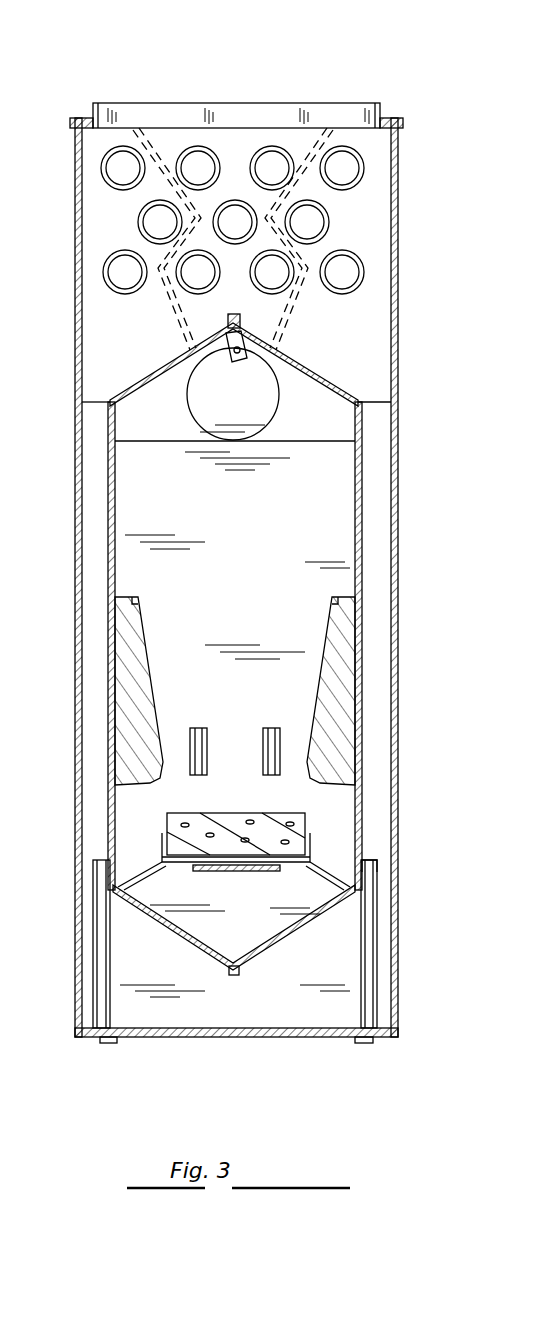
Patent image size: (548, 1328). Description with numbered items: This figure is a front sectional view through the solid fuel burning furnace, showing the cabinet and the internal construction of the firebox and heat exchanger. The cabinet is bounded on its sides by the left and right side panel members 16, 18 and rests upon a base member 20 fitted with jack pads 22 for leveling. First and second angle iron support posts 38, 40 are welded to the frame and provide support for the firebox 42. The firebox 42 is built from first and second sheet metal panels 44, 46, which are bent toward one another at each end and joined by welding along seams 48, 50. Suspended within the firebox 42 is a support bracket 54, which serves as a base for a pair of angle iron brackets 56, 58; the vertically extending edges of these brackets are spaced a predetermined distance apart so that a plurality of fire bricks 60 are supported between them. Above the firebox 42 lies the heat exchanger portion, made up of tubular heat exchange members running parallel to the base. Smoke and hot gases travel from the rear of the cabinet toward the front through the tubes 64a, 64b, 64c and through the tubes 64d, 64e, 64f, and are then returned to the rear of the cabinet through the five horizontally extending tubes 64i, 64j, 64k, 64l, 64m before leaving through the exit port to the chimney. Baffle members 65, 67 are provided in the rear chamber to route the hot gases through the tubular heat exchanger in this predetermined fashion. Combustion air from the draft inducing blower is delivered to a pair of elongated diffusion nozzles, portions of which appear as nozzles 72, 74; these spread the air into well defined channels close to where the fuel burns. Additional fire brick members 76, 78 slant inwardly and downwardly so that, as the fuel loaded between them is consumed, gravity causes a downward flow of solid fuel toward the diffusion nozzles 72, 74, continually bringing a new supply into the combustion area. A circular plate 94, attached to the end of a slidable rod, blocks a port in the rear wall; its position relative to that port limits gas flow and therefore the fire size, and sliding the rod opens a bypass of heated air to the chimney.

The left side panel member 16 is at (76, 520).
The right side panel member 18 is at (398, 520).
The base member 20 is at (224, 1038).
The jack pads 22 is at (108, 1044).
The first angle iron support post 38 is at (96, 965).
The second angle iron support post 40 is at (376, 965).
The firebox 42 is at (252, 556).
The first sheet metal panel 44 is at (116, 490).
The second sheet metal panel 46 is at (354, 490).
The seam 48 is at (240, 974).
The seam 50 is at (240, 318).
The support bracket 54 is at (378, 868).
The angle iron bracket 56 is at (310, 827).
The angle iron bracket 58 is at (162, 827).
The fire bricks 60 is at (245, 813).
The heat exchanger tube 64a is at (364, 168).
The heat exchanger tube 64b is at (329, 222).
The heat exchanger tube 64c is at (364, 272).
The heat exchanger tube 64d is at (101, 168).
The heat exchanger tube 64e is at (138, 222).
The heat exchanger tube 64f is at (103, 272).
The heat exchanger tube 64i is at (198, 146).
The heat exchanger tube 64j is at (272, 146).
The heat exchanger tube 64k is at (234, 200).
The heat exchanger tube 64l is at (183, 290).
The heat exchanger tube 64m is at (287, 290).
The baffle member 65 is at (292, 330).
The baffle member 67 is at (172, 330).
The diffusion nozzle 72 is at (198, 728).
The diffusion nozzle 74 is at (270, 728).
The fire brick member 76 is at (140, 630).
The fire brick member 78 is at (330, 630).
The circular plate 94 is at (278, 408).